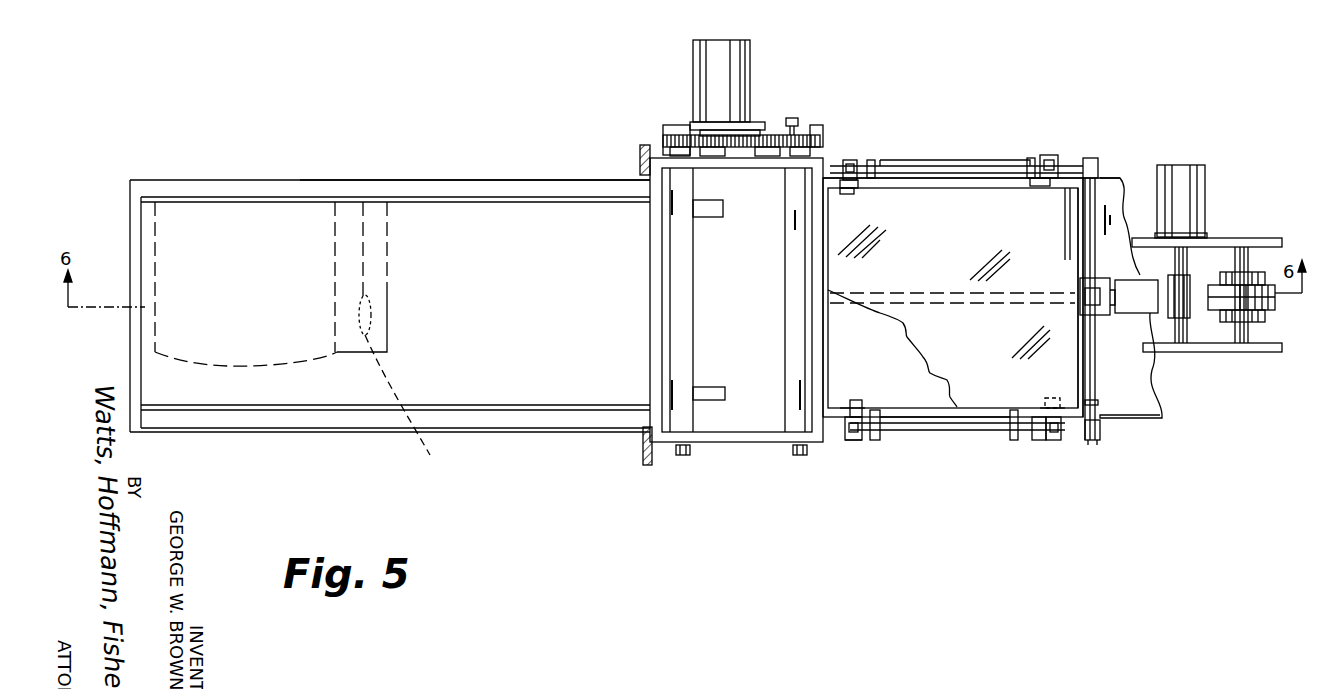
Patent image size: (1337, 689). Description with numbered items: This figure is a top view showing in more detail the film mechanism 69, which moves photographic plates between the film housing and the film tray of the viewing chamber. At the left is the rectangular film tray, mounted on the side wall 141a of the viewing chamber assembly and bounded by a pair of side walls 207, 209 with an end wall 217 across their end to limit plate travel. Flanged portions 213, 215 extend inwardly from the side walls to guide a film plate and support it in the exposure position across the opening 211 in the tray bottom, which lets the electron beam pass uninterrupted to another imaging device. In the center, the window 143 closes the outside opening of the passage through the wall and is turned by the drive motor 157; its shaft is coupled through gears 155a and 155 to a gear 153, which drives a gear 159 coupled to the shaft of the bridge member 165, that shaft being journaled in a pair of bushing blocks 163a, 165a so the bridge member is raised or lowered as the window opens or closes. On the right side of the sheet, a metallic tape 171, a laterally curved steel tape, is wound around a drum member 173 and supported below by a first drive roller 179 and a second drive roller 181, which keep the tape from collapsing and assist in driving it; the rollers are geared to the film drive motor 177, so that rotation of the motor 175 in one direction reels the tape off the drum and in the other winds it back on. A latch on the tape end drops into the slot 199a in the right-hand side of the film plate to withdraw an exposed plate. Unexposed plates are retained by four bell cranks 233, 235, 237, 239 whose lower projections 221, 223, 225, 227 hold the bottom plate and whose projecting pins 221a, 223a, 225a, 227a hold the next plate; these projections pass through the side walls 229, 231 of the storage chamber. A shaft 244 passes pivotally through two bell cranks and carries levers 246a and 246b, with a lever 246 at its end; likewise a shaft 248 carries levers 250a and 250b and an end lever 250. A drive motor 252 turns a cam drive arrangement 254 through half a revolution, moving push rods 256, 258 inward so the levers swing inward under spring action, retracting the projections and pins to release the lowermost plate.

The film mechanism 69 is at (1017, 494).
The side wall 141a is at (652, 462).
The window 143 is at (703, 405).
The gear 153 is at (750, 130).
The gear 155 is at (688, 130).
The gear 155a is at (668, 135).
The drive motor 157 is at (693, 75).
The gear 159 is at (815, 140).
The bushing block 163a is at (800, 457).
The bridge member 165 is at (785, 400).
The bushing block 165a is at (792, 120).
The metallic tape 171 is at (1212, 300).
The drum member 173 is at (1250, 322).
The motor 175 is at (1250, 275).
The film drive motor 177 is at (1180, 165).
The first drive roller 179 is at (1182, 318).
The second drive roller 181 is at (1150, 313).
The slot 199a is at (427, 383).
The side wall 207 is at (225, 197).
The side wall 209 is at (225, 412).
The opening 211 is at (328, 385).
The flanged portion 213 is at (470, 197).
The flanged portion 215 is at (536, 412).
The end wall 217 is at (133, 205).
The lower projection 221 is at (1068, 188).
The projecting pin 221a is at (1068, 200).
The lower projection 223 is at (934, 155).
The projecting pin 223a is at (847, 188).
The lower projection 225 is at (1070, 465).
The projecting pin 225a is at (1055, 400).
The lower projection 227 is at (892, 432).
The projecting pin 227a is at (845, 440).
The side wall 229 is at (958, 180).
The side wall 231 is at (968, 430).
The bell crank 233 is at (1048, 160).
The bell crank 235 is at (848, 170).
The bell crank 237 is at (1040, 432).
The bell crank 239 is at (860, 425).
The shaft 244 is at (950, 133).
The lever 246 is at (1090, 160).
The lever 246a is at (1038, 178).
The lever 246b is at (843, 170).
The shaft 248 is at (928, 432).
The lever 250 is at (1085, 440).
The lever 250a is at (1048, 410).
The lever 250b is at (848, 440).
The drive motor 252 is at (1140, 418).
The cam drive arrangement 254 is at (1097, 420).
The push rod 256 is at (1092, 440).
The push rod 258 is at (1097, 178).